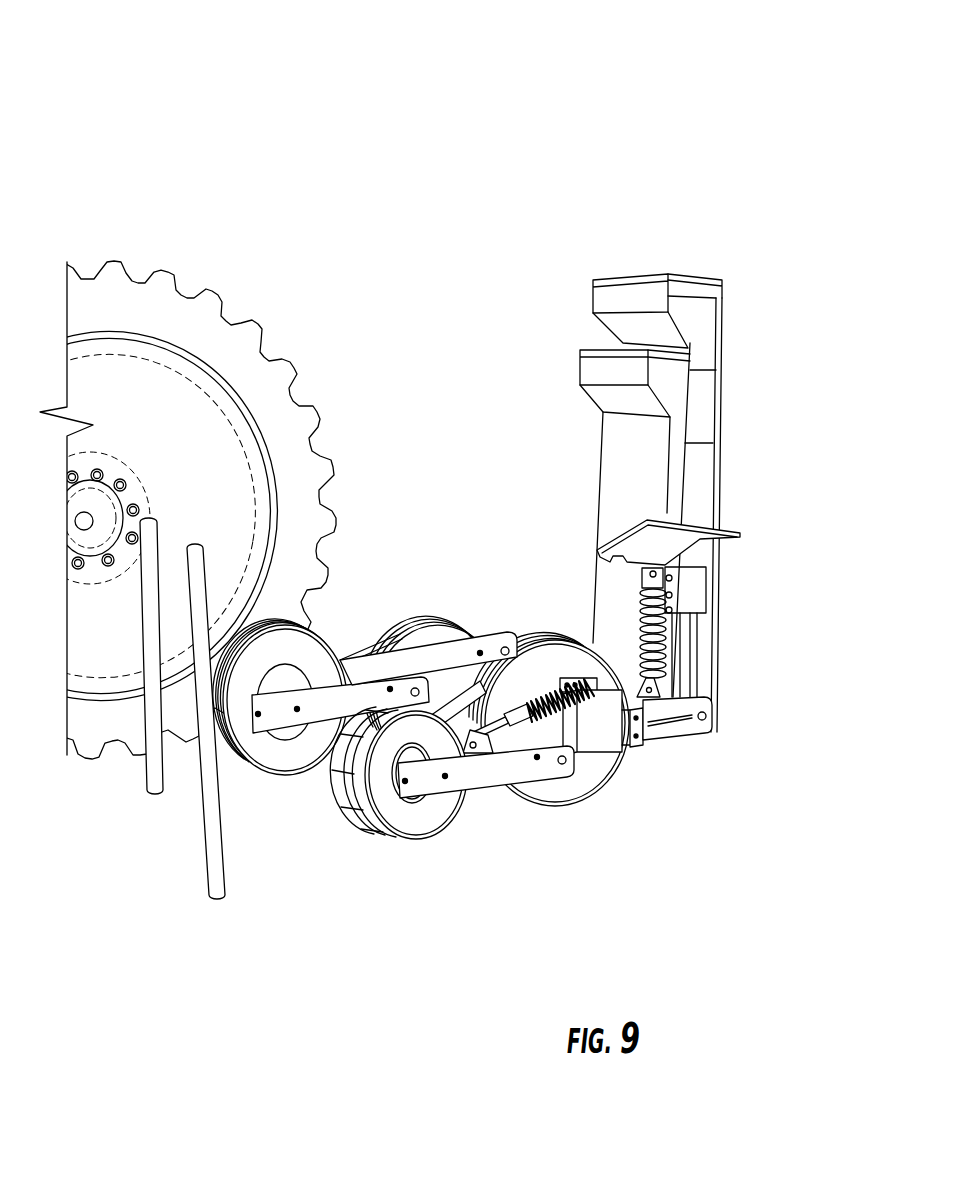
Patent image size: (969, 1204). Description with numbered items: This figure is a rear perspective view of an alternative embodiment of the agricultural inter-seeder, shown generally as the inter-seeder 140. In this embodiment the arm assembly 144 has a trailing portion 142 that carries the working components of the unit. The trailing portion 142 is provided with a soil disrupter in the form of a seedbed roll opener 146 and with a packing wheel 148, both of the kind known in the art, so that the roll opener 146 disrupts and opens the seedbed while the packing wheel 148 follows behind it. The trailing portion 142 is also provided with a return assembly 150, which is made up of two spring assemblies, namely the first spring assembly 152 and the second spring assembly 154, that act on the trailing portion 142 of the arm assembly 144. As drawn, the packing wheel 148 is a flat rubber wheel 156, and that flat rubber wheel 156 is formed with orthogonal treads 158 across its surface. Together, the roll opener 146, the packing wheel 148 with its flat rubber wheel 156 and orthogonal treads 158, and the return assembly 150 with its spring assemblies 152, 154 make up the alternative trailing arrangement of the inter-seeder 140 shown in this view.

The alternative embodiment of the agricultural inter-seeder 140 is at (758, 93).
The trailing portion 142 is at (540, 847).
The arm assembly 144 is at (710, 737).
The seedbed roll opener 146 is at (570, 640).
The packing wheel 148 is at (375, 830).
The return assembly 150 is at (515, 633).
The spring assembly 152 is at (570, 745).
The spring assembly 154 is at (467, 680).
The flat rubber wheel 156 is at (290, 733).
The orthogonal treads 158 is at (232, 880).